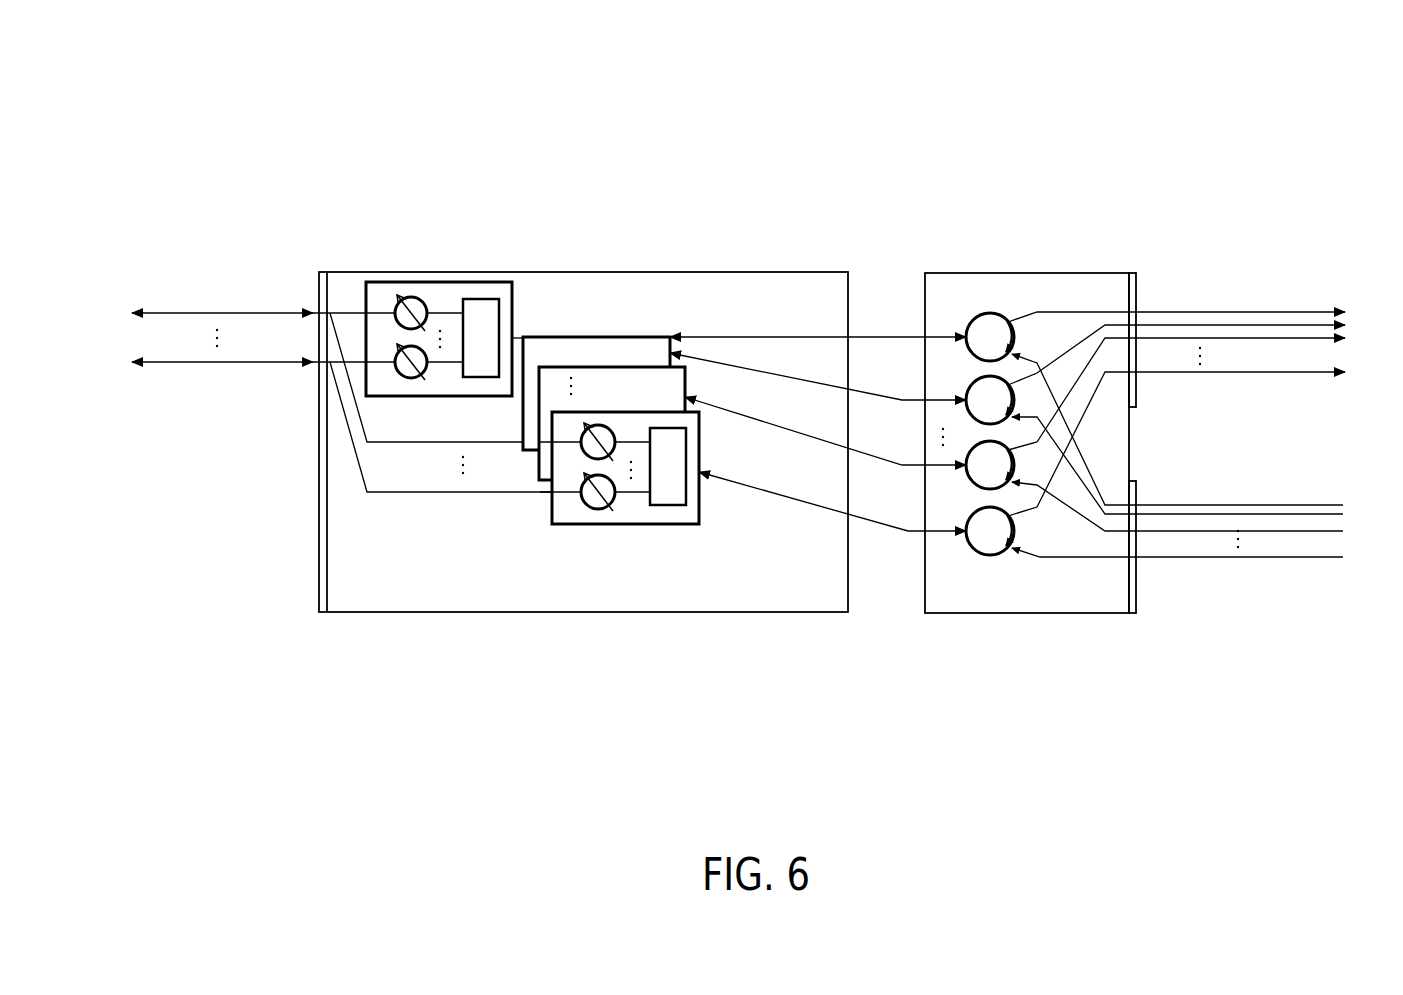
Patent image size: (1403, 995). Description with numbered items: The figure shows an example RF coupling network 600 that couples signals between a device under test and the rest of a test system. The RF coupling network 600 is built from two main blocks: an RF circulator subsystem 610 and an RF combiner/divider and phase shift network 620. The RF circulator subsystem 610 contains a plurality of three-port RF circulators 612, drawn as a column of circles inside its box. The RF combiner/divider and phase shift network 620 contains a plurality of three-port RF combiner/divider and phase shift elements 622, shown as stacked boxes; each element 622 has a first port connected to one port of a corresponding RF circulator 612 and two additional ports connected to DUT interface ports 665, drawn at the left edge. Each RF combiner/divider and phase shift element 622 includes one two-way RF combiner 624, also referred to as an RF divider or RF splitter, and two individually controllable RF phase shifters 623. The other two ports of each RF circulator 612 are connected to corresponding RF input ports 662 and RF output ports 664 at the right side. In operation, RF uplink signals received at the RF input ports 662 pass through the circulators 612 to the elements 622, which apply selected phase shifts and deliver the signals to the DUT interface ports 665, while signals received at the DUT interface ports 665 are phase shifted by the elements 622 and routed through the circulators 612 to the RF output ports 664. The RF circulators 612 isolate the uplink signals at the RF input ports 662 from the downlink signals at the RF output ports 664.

The RF coupling network 600 is at (1367, 68).
The RF circulator subsystem 610 is at (995, 273).
The three-port RF circulator 612 is at (976, 318).
The RF combiner/divider and phase shift network 620 is at (592, 272).
The RF combiner/divider and phase shift element 622 is at (573, 337).
The RF phase shifter 623 is at (596, 422).
The two-way RF combiner 624 is at (668, 505).
The RF input port 662 is at (1133, 613).
The RF output port 664 is at (1133, 273).
The DUT interface port 665 is at (322, 272).